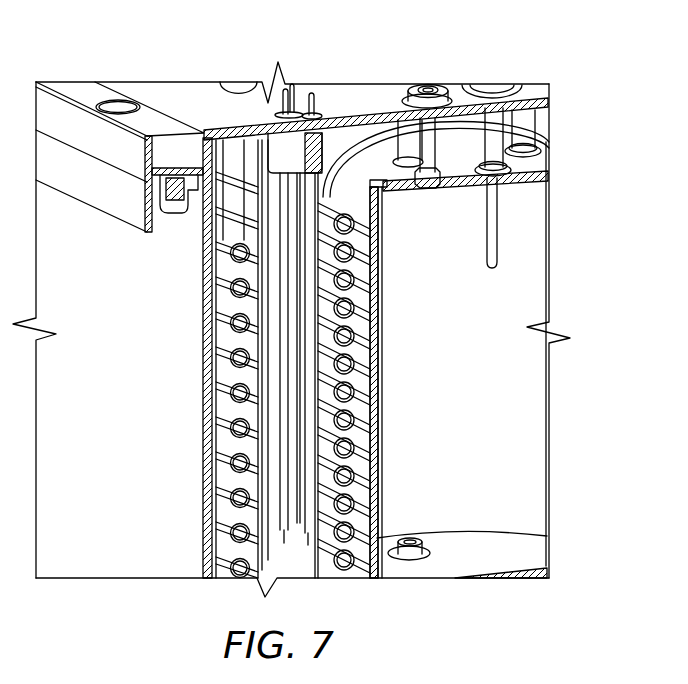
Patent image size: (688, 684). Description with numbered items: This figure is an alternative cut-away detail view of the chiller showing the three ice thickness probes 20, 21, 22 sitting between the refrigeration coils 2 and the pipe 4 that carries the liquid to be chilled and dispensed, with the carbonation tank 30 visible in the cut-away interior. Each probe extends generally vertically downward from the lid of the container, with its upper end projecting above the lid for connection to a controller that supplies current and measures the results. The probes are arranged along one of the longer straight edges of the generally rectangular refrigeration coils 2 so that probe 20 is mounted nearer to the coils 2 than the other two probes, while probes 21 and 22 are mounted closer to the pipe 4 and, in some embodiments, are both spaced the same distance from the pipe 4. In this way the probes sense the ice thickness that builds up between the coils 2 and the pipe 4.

The refrigeration coils 2 is at (230, 543).
The pipe 4 is at (350, 543).
The ice thickness probe 20 is at (286, 91).
The ice thickness probe 21 is at (293, 84).
The ice thickness probe 22 is at (318, 96).
The carbonation tank 30 is at (510, 492).